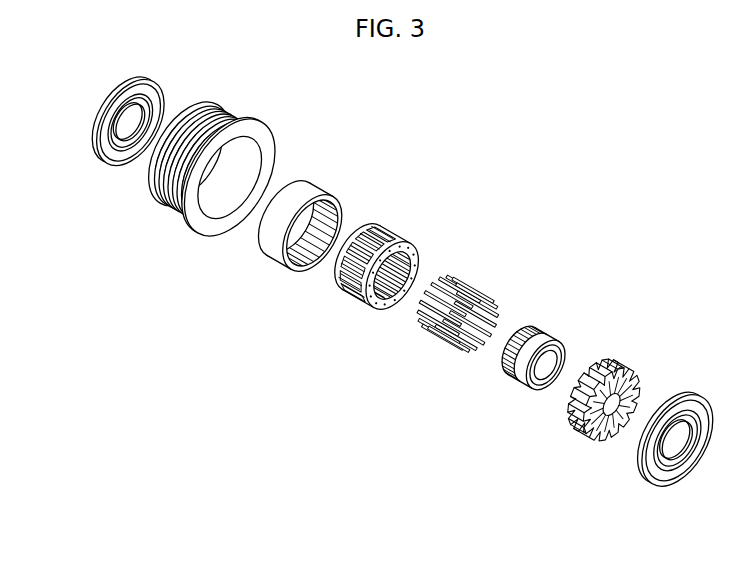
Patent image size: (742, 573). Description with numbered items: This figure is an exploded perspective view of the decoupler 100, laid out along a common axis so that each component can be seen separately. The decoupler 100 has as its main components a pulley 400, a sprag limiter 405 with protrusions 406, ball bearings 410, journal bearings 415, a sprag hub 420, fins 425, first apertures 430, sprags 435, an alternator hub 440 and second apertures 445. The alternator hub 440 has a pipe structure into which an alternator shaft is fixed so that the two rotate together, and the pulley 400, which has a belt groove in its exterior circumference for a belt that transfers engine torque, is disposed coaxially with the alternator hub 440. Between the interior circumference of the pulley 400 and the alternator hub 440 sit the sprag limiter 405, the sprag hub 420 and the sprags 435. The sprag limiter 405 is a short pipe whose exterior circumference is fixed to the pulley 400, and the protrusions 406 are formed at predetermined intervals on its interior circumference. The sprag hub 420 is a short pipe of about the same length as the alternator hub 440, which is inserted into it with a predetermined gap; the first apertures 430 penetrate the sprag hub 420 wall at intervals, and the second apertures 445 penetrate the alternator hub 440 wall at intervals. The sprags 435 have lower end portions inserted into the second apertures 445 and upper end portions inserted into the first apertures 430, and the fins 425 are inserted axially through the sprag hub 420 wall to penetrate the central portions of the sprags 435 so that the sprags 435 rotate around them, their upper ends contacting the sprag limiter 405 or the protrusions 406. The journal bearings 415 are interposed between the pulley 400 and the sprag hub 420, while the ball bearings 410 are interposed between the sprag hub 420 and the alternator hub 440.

The decoupler 100 is at (510, 151).
The pulley 400 is at (187, 224).
The sprag limiter 405 is at (271, 251).
The protrusions 406 is at (293, 268).
The ball bearings 410 is at (121, 145).
The journal bearings 415 is at (94, 150).
The sprag hub 420 is at (401, 254).
The fins 425 is at (432, 333).
The first apertures 430 is at (377, 238).
The sprags 435 is at (574, 426).
The alternator hub 440 is at (507, 366).
The second apertures 445 is at (541, 342).